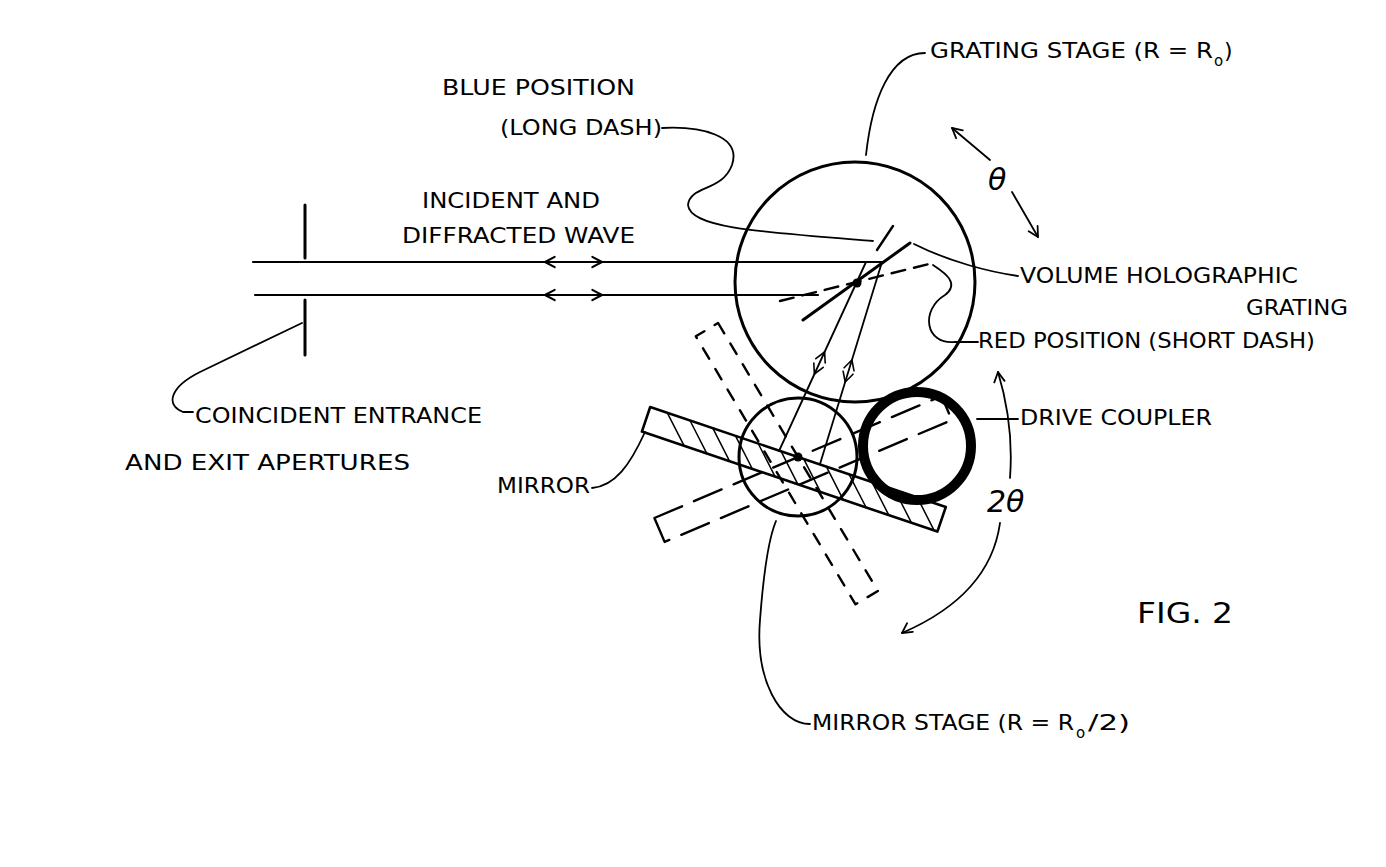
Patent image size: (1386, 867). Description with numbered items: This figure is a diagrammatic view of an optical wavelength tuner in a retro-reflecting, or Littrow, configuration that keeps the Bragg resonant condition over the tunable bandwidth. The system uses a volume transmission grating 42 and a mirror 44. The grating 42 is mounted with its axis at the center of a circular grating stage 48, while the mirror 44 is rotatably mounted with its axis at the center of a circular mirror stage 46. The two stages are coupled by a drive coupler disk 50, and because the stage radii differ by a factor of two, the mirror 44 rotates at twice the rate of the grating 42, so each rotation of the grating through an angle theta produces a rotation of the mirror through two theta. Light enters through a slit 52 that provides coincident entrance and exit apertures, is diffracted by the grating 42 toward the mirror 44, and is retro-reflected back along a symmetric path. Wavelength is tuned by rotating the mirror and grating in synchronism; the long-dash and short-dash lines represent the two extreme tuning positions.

The volume transmission grating 42 is at (912, 240).
The mirror 44 is at (648, 412).
The mirror stage 46 is at (770, 470).
The grating stage 48 is at (757, 186).
The drive coupler disk 50 is at (960, 494).
The slit 52 is at (312, 230).